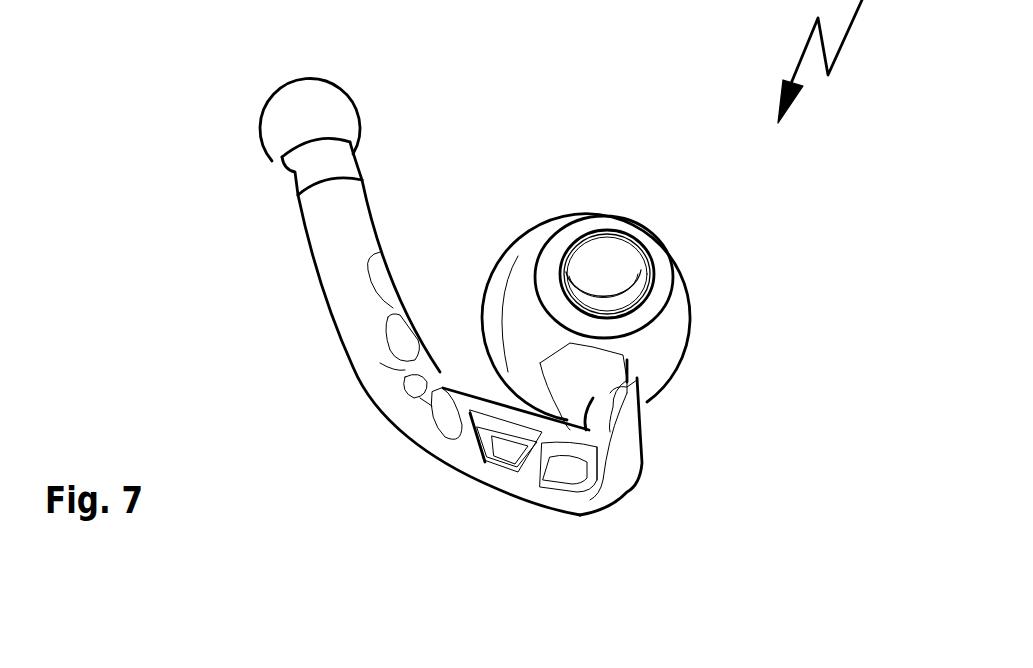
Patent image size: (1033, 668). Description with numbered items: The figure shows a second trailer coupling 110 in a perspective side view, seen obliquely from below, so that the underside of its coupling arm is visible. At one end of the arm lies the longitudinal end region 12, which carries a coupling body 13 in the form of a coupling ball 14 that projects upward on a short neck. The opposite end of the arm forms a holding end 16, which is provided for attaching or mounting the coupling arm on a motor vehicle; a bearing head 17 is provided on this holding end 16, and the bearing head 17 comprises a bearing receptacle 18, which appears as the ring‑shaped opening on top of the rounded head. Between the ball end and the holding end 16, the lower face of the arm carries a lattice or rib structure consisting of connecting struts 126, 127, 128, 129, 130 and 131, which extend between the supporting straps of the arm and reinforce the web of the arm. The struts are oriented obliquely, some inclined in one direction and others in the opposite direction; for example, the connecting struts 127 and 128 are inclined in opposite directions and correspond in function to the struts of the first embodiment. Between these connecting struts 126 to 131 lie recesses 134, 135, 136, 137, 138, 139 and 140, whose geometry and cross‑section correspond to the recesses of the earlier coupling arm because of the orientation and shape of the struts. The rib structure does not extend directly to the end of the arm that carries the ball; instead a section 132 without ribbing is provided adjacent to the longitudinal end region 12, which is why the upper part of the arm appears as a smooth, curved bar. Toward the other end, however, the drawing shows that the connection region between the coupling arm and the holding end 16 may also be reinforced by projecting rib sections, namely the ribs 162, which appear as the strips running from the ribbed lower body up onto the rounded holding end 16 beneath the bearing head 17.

The coupling ball 14 is at (334, 96).
The coupling body 13 is at (363, 107).
The longitudinal end region 12 is at (345, 168).
The section 132 is at (401, 347).
The recess 140 is at (400, 264).
The connecting strut 131 is at (457, 304).
The recess 139 is at (431, 315).
The recess 138 is at (441, 350).
The recess 137 is at (458, 392).
The connecting strut 130 is at (341, 384).
The connecting strut 129 is at (364, 419).
The connecting strut 128 is at (463, 433).
The recess 136 is at (472, 461).
The connecting strut 127 is at (495, 487).
The recess 135 is at (567, 515).
The connecting strut 126 is at (629, 505).
The recess 134 is at (647, 446).
The trailer coupling 110 is at (656, 389).
The ribs 162 is at (702, 365).
The holding end 16 is at (632, 317).
The bearing head 17 is at (632, 264).
The bearing receptacle 18 is at (605, 239).